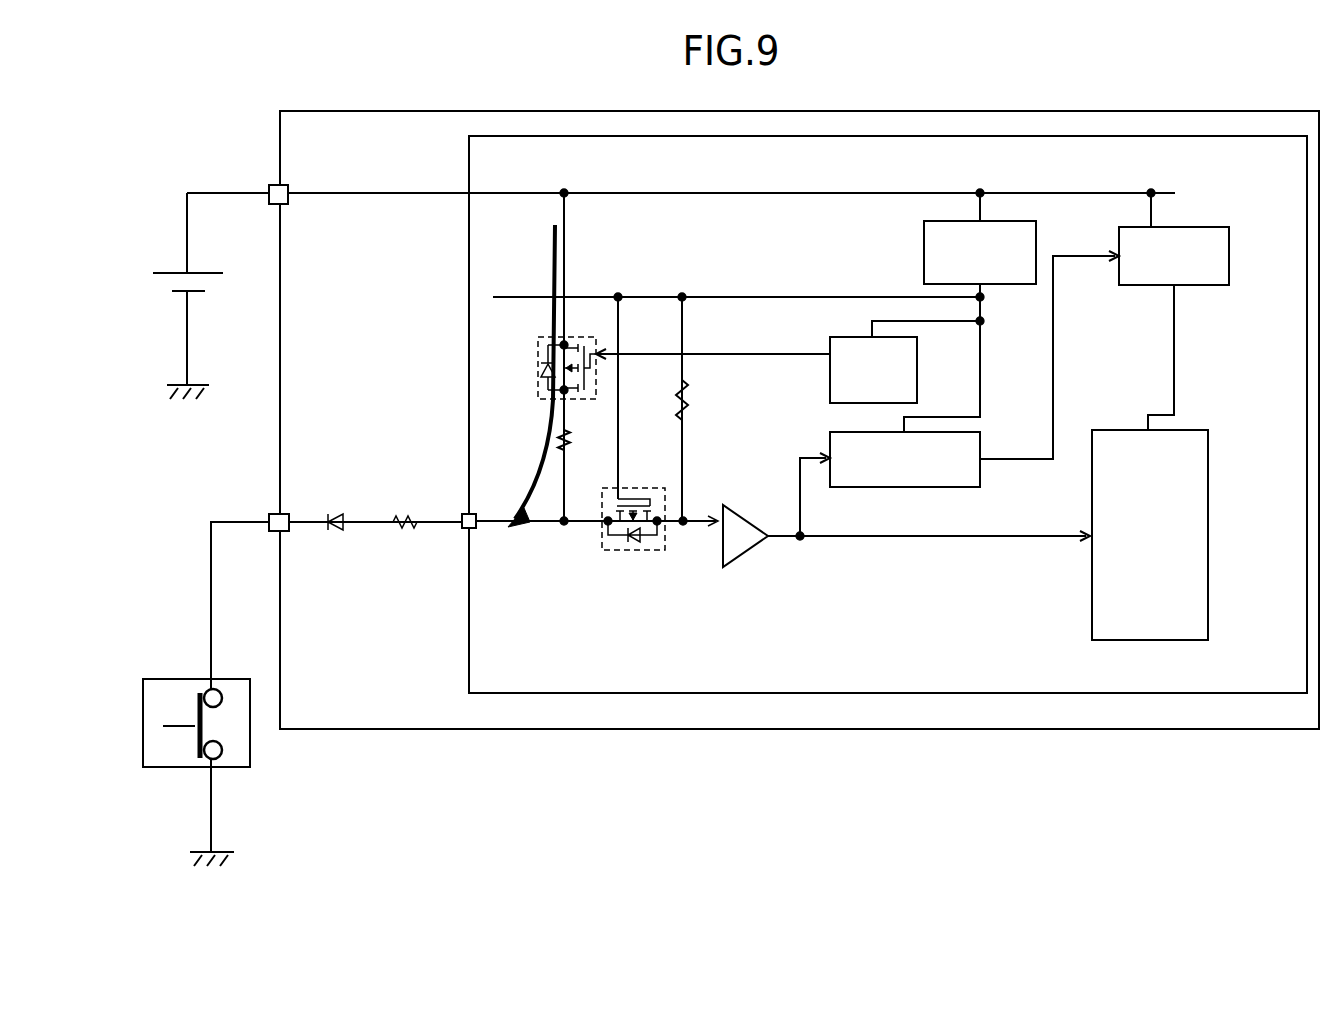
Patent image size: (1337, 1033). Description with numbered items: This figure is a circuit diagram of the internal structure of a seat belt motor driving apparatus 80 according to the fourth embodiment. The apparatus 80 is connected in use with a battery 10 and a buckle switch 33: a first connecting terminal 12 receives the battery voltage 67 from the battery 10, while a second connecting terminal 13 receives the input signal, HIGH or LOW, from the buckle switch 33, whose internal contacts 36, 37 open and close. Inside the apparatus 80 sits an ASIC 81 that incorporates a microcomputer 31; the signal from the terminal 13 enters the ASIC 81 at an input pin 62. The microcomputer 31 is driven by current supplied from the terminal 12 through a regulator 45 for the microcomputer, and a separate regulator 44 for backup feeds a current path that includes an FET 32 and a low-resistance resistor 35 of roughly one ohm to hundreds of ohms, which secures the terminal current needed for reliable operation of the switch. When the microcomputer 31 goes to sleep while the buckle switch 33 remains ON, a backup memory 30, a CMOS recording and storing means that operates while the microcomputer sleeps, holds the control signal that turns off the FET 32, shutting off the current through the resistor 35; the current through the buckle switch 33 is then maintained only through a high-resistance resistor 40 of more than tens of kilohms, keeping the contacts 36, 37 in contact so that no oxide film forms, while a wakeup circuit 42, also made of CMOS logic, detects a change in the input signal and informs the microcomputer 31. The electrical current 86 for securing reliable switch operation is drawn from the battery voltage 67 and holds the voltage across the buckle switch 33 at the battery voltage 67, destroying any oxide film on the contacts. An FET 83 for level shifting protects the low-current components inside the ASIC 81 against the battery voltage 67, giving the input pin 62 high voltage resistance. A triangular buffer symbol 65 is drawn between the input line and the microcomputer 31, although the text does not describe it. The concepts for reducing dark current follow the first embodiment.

The battery 10 is at (215, 283).
The first connecting terminal 12 is at (288, 204).
The second connecting terminal 13 is at (290, 533).
The backup memory 30 is at (830, 380).
The microcomputer 31 is at (1208, 538).
The FET 32 is at (555, 340).
The buckle switch 33 is at (198, 741).
The resistor 35 is at (572, 440).
The contact 36 is at (215, 690).
The contact 37 is at (200, 690).
The resistor 40 is at (690, 404).
The wakeup circuit 42 is at (980, 480).
The regulator for backup 44 is at (1036, 240).
The regulator for μC 45 is at (1229, 262).
The input pin 62 is at (466, 512).
The comparator / buffer amplifier 65 is at (742, 558).
The battery voltage 67 is at (593, 192).
The motor driving apparatus 80 is at (1248, 730).
The ASIC 81 is at (468, 650).
The FET for level shifting 83 is at (632, 553).
The electrical current 86 is at (512, 530).